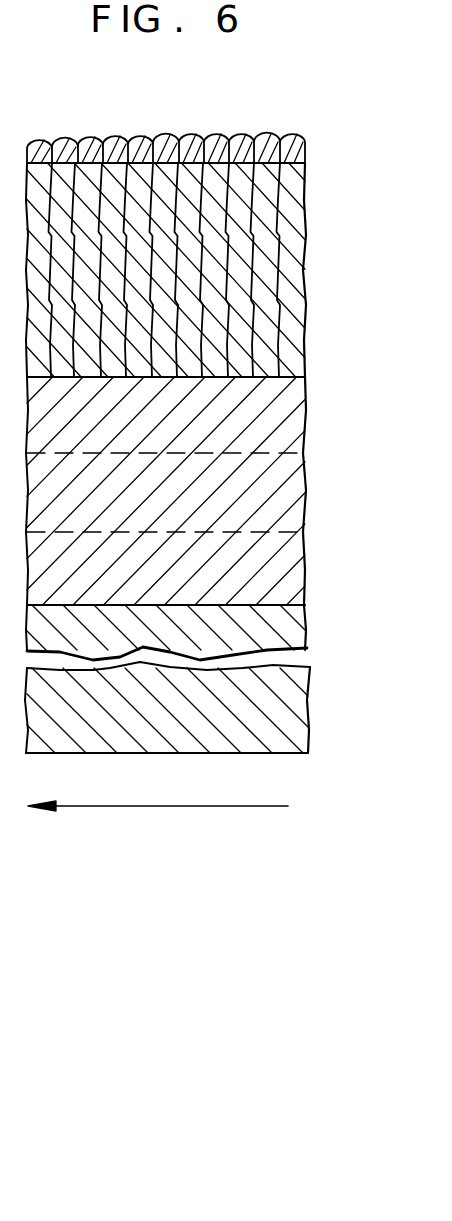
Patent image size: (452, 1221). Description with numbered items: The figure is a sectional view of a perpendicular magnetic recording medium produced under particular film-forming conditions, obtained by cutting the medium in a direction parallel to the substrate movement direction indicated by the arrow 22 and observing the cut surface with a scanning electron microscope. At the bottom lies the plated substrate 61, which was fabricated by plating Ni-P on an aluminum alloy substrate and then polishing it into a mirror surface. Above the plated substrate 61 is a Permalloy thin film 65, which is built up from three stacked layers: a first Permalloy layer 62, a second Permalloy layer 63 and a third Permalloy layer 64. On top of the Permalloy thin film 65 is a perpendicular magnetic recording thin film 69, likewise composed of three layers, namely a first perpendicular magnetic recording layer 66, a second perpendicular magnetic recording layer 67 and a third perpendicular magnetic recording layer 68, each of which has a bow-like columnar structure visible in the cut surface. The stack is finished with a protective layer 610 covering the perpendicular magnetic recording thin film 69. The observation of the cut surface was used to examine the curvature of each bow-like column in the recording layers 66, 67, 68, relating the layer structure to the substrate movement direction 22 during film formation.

The protective layer 610 is at (335, 127).
The perpendicular magnetic recording thin film 69 is at (223, 270).
The third perpendicular magnetic recording layer 68 is at (295, 201).
The second perpendicular magnetic recording layer 67 is at (290, 259).
The first perpendicular magnetic recording layer 66 is at (189, 341).
The Permalloy thin film 65 is at (222, 491).
The third Permalloy layer 64 is at (287, 412).
The second Permalloy layer 63 is at (280, 496).
The first Permalloy layer 62 is at (189, 568).
The plated substrate 61 is at (297, 633).
The substrate movement direction arrow 22 is at (240, 807).